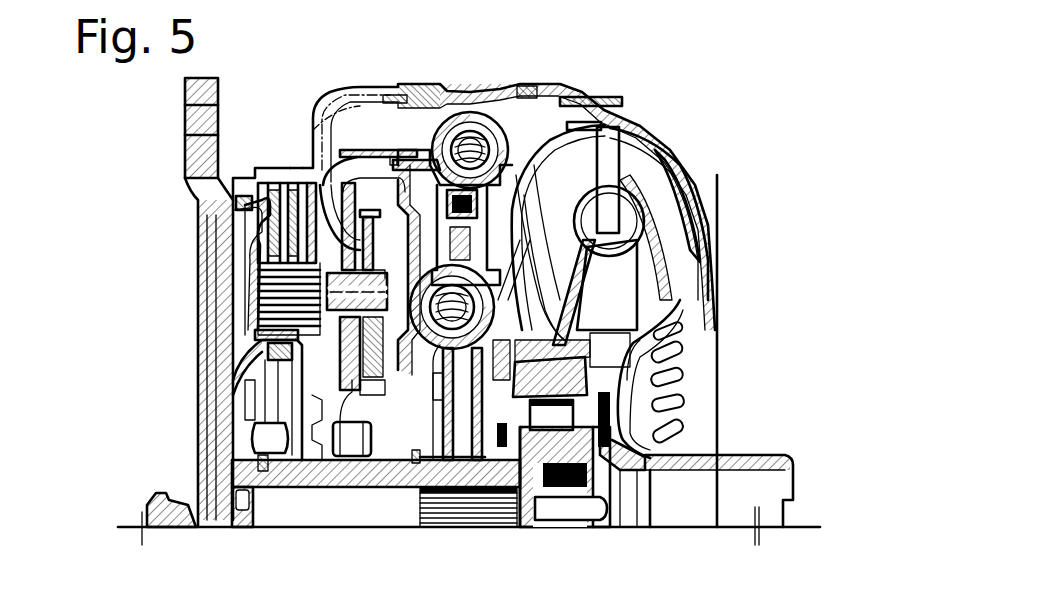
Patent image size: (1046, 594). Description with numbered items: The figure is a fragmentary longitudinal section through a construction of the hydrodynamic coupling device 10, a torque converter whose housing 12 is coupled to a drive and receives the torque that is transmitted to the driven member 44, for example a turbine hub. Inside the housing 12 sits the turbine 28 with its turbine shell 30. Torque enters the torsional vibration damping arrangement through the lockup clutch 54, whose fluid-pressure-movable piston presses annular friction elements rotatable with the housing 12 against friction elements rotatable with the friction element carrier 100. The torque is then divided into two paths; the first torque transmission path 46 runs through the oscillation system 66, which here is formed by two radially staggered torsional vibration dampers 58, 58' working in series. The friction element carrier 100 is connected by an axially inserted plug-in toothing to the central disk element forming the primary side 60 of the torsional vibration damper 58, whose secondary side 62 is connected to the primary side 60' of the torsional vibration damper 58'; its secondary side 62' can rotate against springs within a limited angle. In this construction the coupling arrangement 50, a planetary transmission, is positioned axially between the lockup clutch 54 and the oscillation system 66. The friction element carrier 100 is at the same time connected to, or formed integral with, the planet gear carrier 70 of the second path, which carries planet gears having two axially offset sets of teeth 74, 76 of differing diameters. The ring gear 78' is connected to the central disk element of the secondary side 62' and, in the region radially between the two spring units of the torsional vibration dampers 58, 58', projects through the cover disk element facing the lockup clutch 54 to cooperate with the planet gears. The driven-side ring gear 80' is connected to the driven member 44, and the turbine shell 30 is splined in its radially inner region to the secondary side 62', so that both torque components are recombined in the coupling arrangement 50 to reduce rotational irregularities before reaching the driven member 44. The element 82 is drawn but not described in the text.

The hydrodynamic coupling device 10 is at (700, 76).
The housing 12 is at (503, 80).
The turbine 28 is at (592, 102).
The turbine shell 30 is at (640, 342).
The driven member 44 is at (472, 472).
The first torque transmission path 46 is at (431, 128).
The coupling arrangement 50 is at (328, 358).
The lockup clutch 54 is at (265, 172).
The torsional vibration damper 58 is at (470, 96).
The torsional vibration damper 58' is at (371, 481).
The primary side 60 is at (431, 188).
The primary side 60' is at (689, 244).
The secondary side 62 is at (632, 225).
The secondary side 62' is at (653, 393).
The oscillation system 66 is at (532, 130).
The planet gear carrier 70 is at (310, 240).
The set of teeth 74 is at (340, 168).
The set of teeth 76 is at (372, 188).
The ring gear 78' is at (360, 143).
The ring gear 80' is at (252, 334).
The piston 82 is at (338, 404).
The friction element carrier 100 is at (326, 166).